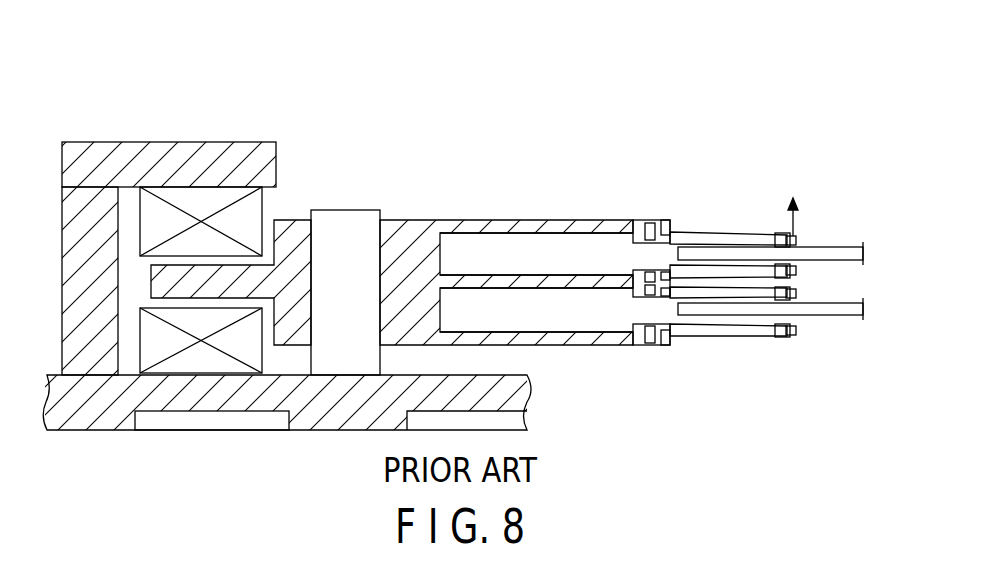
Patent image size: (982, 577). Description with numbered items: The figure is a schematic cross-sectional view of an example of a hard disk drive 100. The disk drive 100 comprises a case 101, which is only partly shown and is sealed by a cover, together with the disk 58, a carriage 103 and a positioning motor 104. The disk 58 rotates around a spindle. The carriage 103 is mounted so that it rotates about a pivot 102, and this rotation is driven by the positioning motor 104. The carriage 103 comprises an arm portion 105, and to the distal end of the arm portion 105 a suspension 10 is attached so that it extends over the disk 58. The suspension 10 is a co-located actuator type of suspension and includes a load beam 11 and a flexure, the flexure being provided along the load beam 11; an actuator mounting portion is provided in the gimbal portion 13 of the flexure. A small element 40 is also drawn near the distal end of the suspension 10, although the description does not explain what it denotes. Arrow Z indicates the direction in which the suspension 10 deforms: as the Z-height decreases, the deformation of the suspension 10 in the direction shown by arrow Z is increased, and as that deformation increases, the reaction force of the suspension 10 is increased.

The hard disk drive 100 is at (214, 92).
The case 101 is at (98, 432).
The pivot 102 is at (345, 215).
The carriage 103 is at (490, 212).
The positioning motor 104 is at (201, 363).
The arm portion 105 is at (597, 220).
The suspension 10 is at (752, 232).
The load beam 11 is at (685, 232).
The gimbal portion 13 is at (775, 232).
The tip member 40 is at (796, 238).
The disk 58 is at (846, 246).
The arrow Z is at (797, 222).